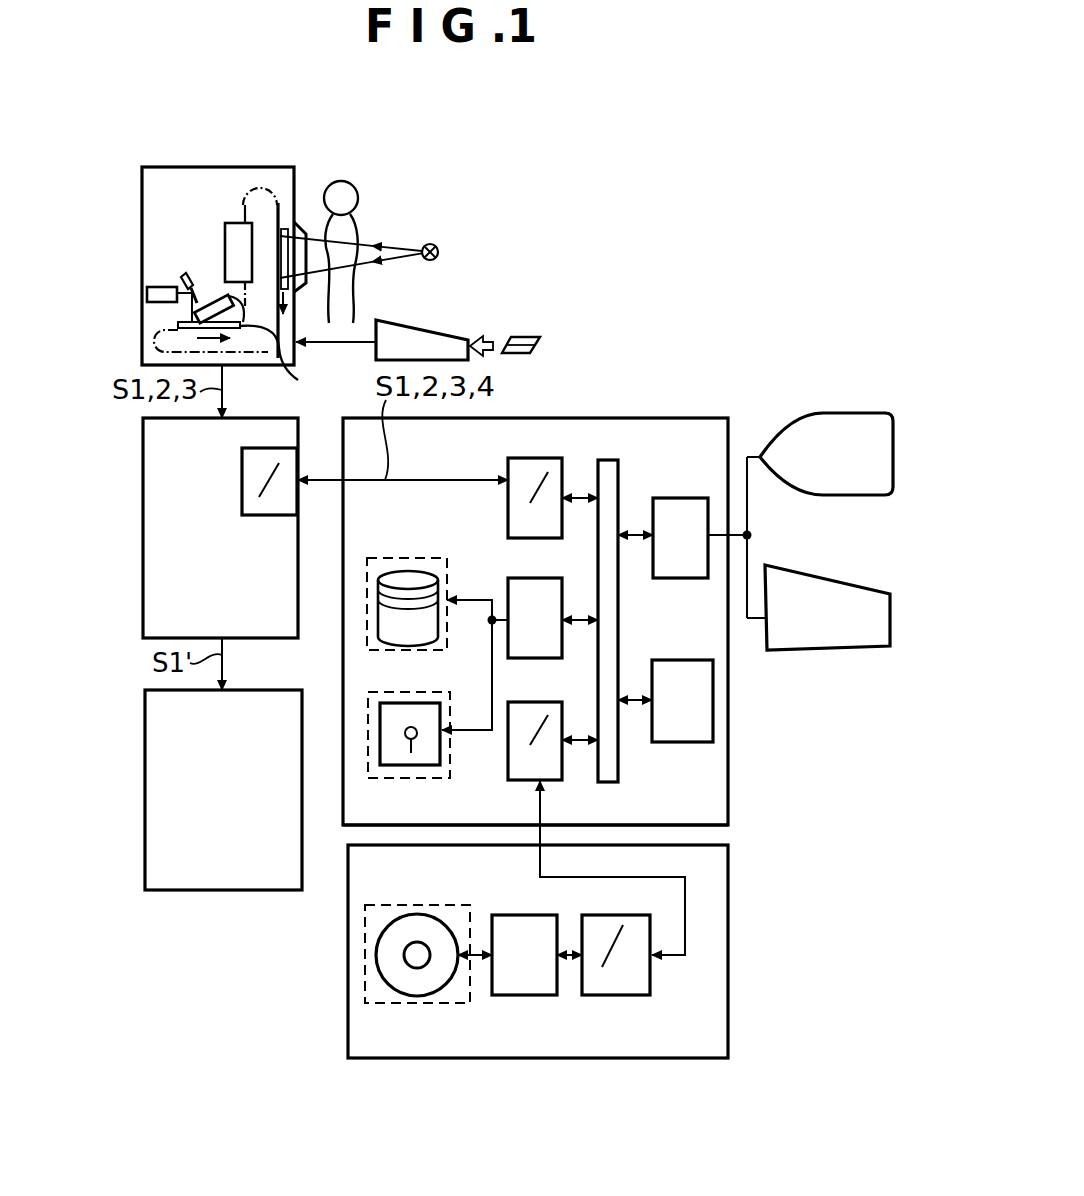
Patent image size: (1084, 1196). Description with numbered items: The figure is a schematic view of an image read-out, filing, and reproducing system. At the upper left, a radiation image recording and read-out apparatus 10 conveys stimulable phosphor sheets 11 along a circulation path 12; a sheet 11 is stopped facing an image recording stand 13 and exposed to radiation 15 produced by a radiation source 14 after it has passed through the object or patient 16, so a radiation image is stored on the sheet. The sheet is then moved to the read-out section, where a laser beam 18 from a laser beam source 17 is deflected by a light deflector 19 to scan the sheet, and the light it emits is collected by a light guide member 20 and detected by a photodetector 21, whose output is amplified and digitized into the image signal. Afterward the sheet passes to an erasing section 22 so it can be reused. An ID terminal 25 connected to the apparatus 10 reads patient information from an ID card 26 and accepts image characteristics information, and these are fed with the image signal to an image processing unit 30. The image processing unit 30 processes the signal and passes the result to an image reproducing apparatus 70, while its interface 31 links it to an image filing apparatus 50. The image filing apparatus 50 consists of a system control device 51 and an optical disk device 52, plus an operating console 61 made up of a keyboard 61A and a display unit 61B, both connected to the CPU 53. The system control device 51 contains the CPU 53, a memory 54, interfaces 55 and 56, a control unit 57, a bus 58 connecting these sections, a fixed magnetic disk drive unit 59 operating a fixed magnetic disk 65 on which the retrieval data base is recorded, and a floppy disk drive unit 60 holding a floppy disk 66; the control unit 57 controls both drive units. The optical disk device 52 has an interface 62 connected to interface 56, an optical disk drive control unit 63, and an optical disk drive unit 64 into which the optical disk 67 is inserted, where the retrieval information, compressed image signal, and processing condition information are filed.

The radiation image recording and read-out apparatus 10 is at (243, 152).
The stimulable phosphor sheet 11 is at (280, 203).
The circulation path 12 is at (245, 206).
The image recording stand 13 is at (306, 228).
The radiation source 14 is at (440, 250).
The radiation 15 is at (387, 249).
The object (patient) 16 is at (344, 225).
The laser beam source 17 is at (152, 287).
The laser beam 18 is at (178, 325).
The light deflector 19 is at (183, 278).
The light guide member 20 is at (208, 305).
The photodetector 21 is at (288, 362).
The erasing section 22 is at (226, 228).
The ID terminal 25 is at (443, 334).
The ID card 26 is at (530, 336).
The image processing unit 30 is at (141, 528).
The interface 31 is at (242, 470).
The image filing apparatus 50 is at (659, 401).
The system control device 51 is at (731, 757).
The optical disk device 52 is at (730, 1000).
The central processing unit (CPU) 53 is at (679, 498).
The memory 54 is at (692, 650).
The interface 55 is at (523, 458).
The interface 56 is at (564, 778).
The control unit 57 is at (533, 658).
The bus 58 is at (640, 455).
The fixed magnetic disk drive unit 59 is at (398, 558).
The floppy disk drive unit 60 is at (425, 779).
The operating console 61 is at (815, 531).
The keyboard 61A is at (800, 565).
The display unit 61B is at (806, 483).
The interface 62 is at (626, 995).
The optical disk drive control unit 63 is at (534, 995).
The optical disk drive unit 64 is at (443, 905).
The fixed magnetic disk 65 is at (421, 626).
The input device 66 is at (392, 766).
The optical disk 67 is at (412, 914).
The image reproducing apparatus 70 is at (143, 765).